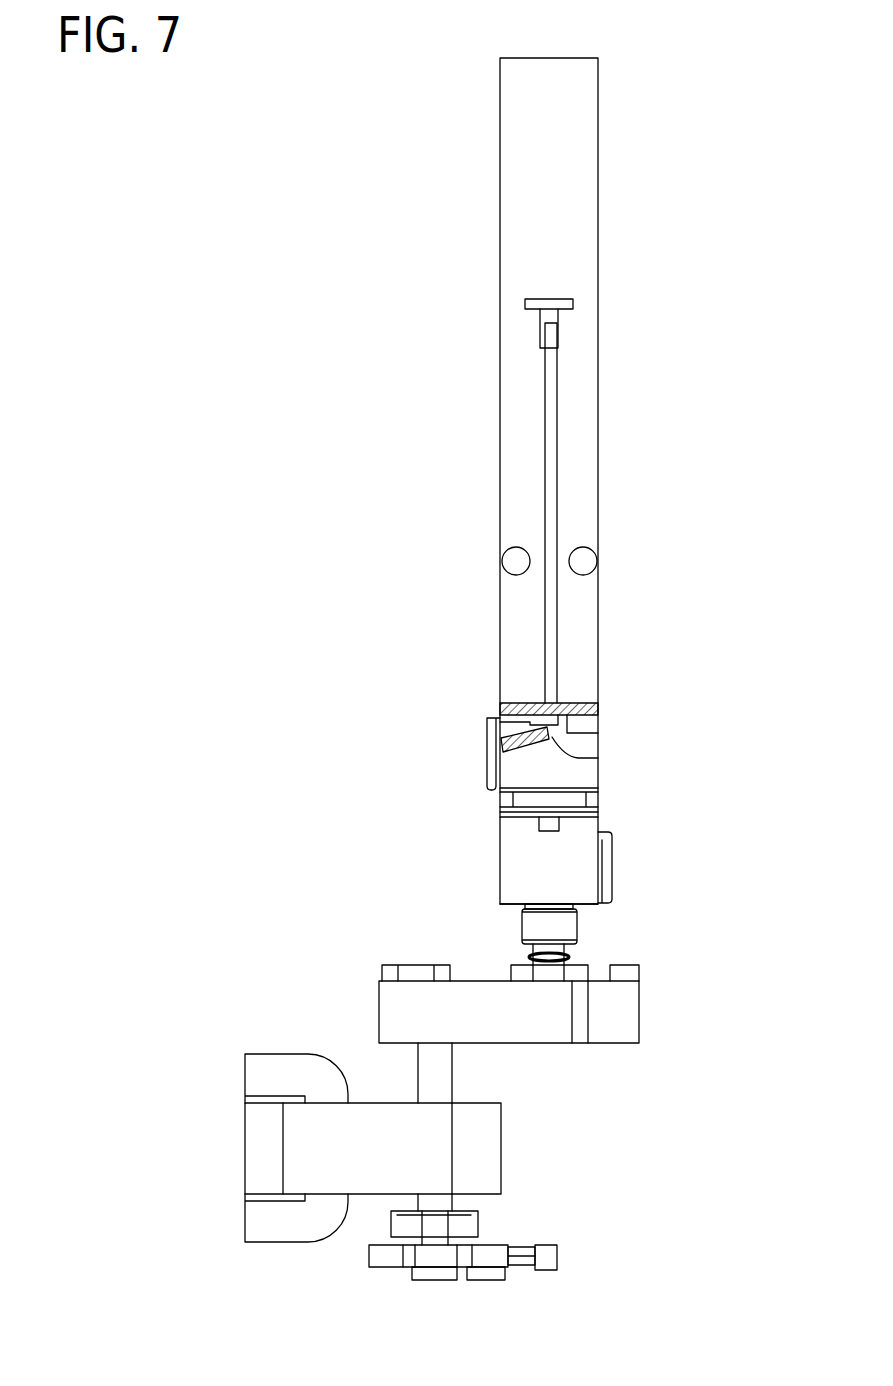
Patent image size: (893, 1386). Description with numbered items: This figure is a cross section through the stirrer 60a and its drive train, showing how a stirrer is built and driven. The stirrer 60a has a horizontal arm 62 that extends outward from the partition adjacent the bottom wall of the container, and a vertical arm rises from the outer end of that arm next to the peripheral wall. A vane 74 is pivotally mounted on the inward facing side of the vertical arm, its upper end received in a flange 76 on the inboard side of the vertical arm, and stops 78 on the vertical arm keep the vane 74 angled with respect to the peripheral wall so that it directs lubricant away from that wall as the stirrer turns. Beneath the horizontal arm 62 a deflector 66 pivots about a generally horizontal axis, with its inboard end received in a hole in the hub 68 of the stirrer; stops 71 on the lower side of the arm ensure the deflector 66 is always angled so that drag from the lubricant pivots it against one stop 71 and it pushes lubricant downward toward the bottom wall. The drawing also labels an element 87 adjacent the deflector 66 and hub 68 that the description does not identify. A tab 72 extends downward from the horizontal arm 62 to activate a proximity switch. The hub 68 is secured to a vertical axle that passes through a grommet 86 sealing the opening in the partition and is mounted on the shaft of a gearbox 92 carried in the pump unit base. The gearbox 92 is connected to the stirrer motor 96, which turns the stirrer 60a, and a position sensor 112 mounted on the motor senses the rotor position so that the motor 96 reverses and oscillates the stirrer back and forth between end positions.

The stirrer 60a is at (605, 110).
The flange 76 is at (558, 298).
The vane 74 is at (557, 401).
The stops 78 is at (583, 547).
The horizontal arm 62 is at (586, 702).
The stops 71 is at (598, 745).
The latch 87 is at (598, 758).
The deflector 66 is at (522, 760).
The tab 72 is at (485, 740).
The grommet 86 is at (500, 808).
The hub 68 is at (500, 882).
The gearbox 92 is at (642, 1010).
The stirrer motor 96 is at (502, 1140).
The position sensor 112 is at (395, 1268).